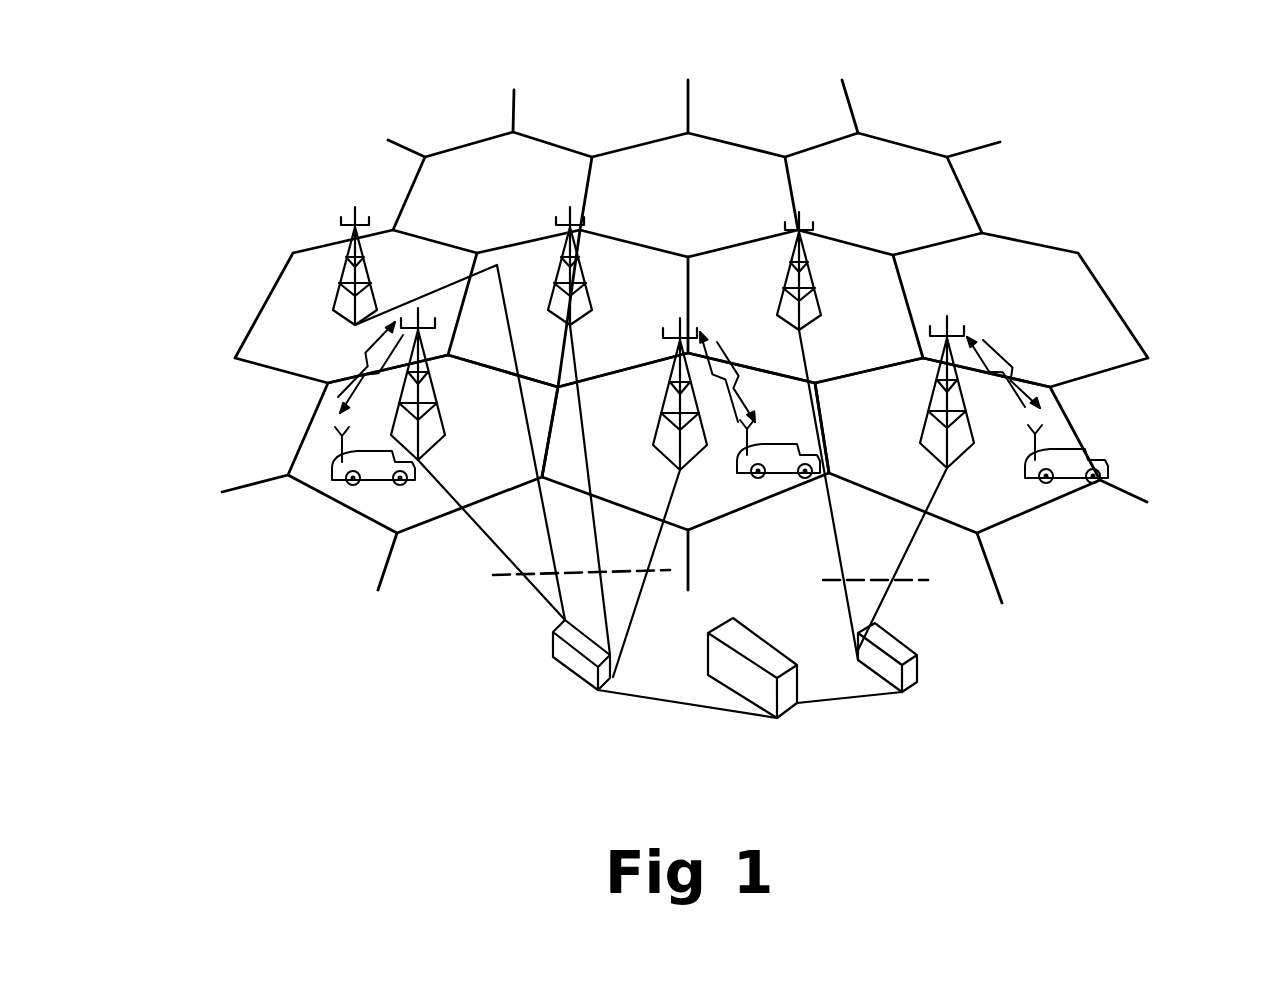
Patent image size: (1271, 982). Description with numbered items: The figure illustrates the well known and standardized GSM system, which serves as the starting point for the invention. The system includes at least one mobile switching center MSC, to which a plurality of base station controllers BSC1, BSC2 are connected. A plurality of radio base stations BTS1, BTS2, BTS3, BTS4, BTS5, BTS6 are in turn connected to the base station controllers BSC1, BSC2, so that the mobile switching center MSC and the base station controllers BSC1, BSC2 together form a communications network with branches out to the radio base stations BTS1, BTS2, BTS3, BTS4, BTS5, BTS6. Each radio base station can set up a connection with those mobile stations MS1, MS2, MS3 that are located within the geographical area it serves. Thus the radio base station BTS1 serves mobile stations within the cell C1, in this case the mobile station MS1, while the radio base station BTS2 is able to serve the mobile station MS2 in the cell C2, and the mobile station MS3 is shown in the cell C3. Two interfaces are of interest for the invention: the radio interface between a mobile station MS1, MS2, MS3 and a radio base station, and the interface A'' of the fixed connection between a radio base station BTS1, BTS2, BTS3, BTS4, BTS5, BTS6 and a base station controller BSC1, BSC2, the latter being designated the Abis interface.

The GSM system GSM is at (278, 217).
The radio base station BTS1 is at (395, 428).
The radio base station BTS2 is at (693, 447).
The radio base station BTS3 is at (967, 377).
The radio base station BTS4 is at (385, 235).
The radio base station BTS5 is at (548, 230).
The radio base station BTS6 is at (812, 277).
The mobile station MS1 is at (338, 474).
The mobile station MS2 is at (818, 435).
The mobile station MS3 is at (1087, 450).
The cell C1 is at (315, 477).
The cell C2 is at (742, 482).
The cell C3 is at (1000, 500).
The interface of the fixed connection A'' is at (713, 600).
The base station controller BSC1 is at (572, 663).
The base station controller BSC2 is at (910, 672).
The mobile switching center MSC is at (755, 692).